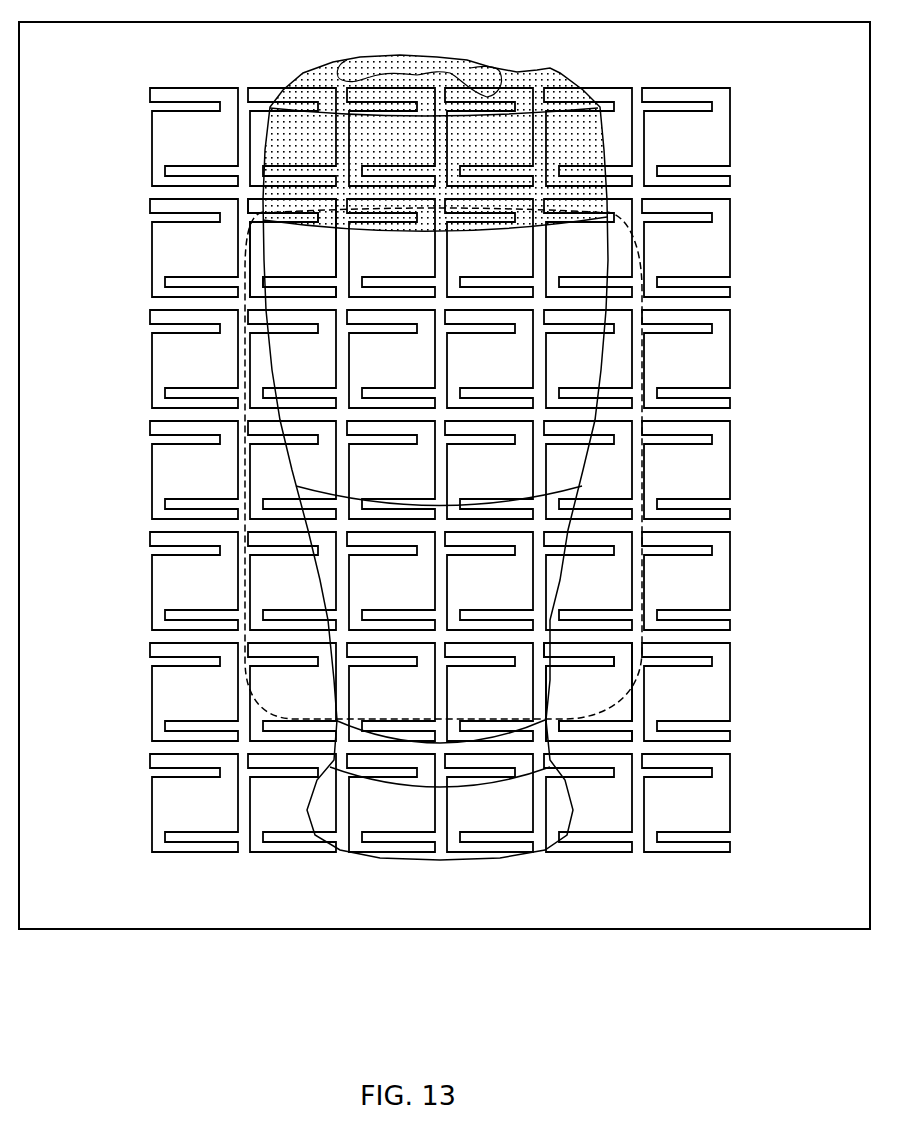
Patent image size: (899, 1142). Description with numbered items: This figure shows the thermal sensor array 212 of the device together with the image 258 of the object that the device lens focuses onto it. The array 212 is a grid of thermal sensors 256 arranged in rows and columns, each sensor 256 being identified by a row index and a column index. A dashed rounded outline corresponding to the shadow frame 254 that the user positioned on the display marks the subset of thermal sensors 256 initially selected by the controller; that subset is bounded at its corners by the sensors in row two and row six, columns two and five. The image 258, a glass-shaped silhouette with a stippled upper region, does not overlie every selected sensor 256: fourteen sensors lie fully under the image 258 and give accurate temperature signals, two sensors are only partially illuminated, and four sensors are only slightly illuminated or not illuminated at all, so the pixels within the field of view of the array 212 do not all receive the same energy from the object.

The array 212 is at (122, 116).
The shadow frame 254 is at (630, 683).
The thermal sensor 256 is at (440, 470).
The image 258 is at (606, 360).